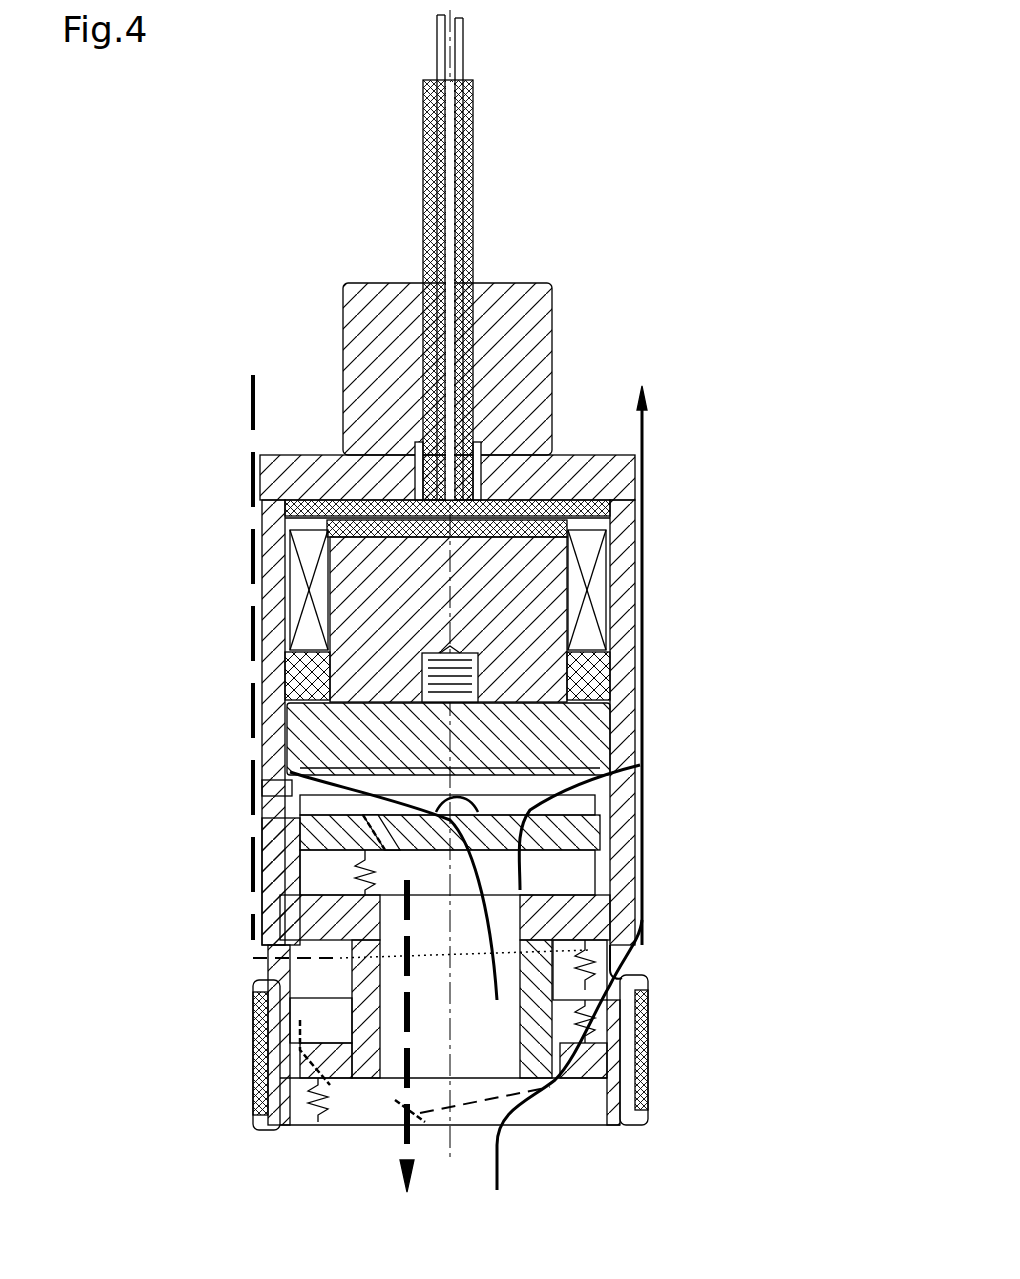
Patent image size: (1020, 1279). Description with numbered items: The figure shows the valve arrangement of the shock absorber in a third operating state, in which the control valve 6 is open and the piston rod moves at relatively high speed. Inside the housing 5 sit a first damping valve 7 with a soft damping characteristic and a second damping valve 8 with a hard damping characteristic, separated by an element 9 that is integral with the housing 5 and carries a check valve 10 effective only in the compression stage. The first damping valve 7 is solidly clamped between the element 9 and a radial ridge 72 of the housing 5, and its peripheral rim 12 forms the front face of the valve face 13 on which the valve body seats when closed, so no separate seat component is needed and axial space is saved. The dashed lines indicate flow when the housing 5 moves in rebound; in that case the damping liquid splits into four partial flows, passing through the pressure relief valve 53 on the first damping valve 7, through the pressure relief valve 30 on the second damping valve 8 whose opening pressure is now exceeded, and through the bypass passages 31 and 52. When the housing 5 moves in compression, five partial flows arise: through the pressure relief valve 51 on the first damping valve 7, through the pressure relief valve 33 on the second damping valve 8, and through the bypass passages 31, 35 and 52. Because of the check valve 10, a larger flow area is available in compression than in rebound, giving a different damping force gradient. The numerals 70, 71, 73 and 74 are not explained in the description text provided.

The housing 5 is at (616, 484).
The control valve 6 is at (668, 543).
The first damping valve 7 is at (600, 843).
The second damping valve 8 is at (607, 1057).
The element 9 is at (600, 908).
The check valve 10 is at (640, 956).
The peripheral rim 12 is at (298, 798).
The valve face 13 is at (605, 786).
The pressure relief valve 30 is at (300, 1080).
The bypass passage 31 is at (614, 1085).
The pressure relief valve 33 is at (622, 1043).
The bypass passage 35 is at (600, 930).
The pressure relief valve 51 is at (612, 822).
The bypass passage 52 is at (292, 772).
The pressure relief valve 53 is at (298, 848).
The control passage 70 is at (336, 1036).
The control passage 71 is at (296, 908).
The radial ridge 72 is at (296, 815).
The inlet opening 73 is at (227, 1055).
The inlet opening 74 is at (290, 1037).